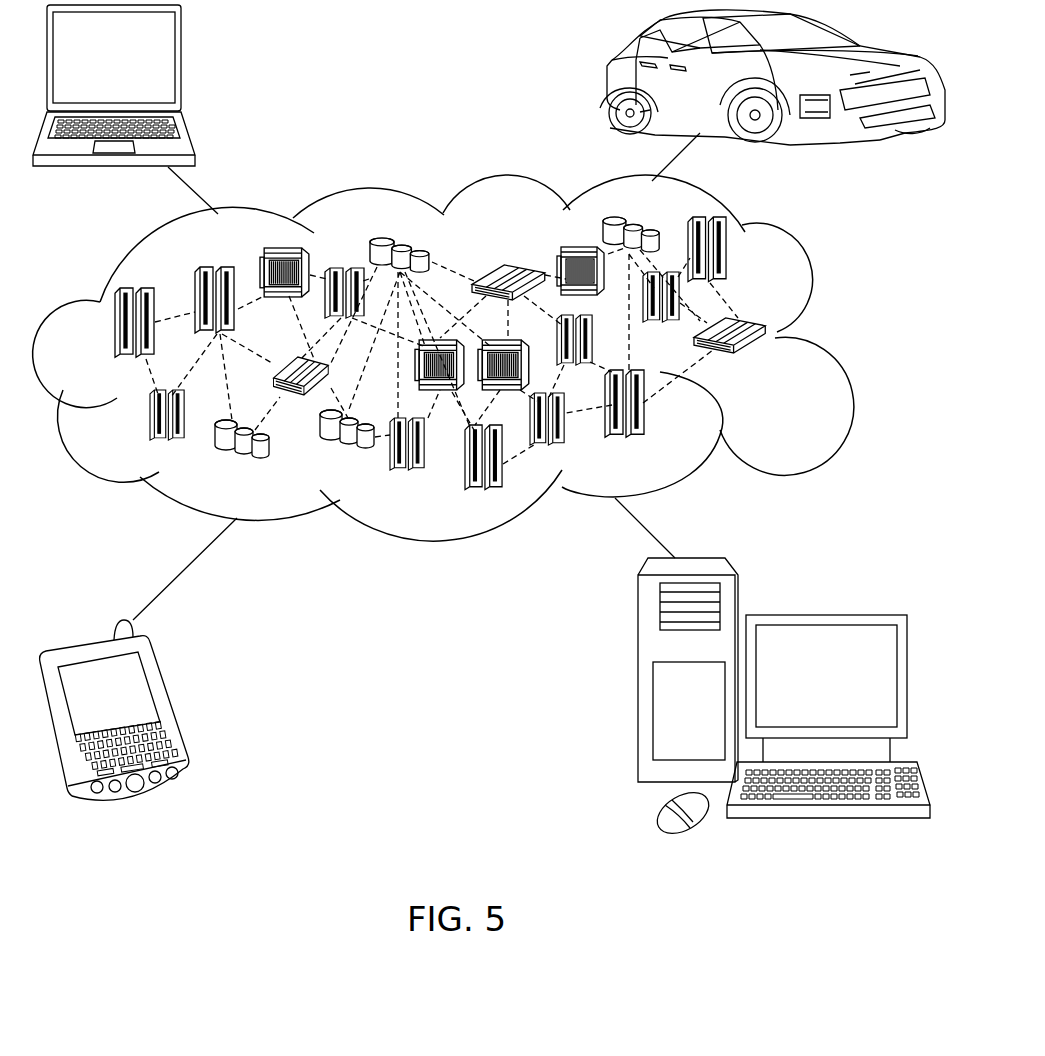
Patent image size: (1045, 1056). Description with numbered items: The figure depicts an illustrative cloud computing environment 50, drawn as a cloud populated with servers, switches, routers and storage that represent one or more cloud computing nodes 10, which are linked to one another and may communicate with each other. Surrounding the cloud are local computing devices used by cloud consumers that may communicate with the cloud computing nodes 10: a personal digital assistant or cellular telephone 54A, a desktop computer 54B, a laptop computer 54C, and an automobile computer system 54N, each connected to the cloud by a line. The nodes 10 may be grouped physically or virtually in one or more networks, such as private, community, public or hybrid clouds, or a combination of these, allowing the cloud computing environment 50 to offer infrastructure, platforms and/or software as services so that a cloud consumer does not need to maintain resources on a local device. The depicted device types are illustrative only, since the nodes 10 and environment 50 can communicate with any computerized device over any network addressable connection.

The cloud computing node 10 is at (768, 363).
The cloud computing environment 50 is at (823, 333).
The personal digital assistant (PDA) or cellular telephone 54A is at (172, 708).
The desktop computer 54B is at (823, 615).
The laptop computer 54C is at (182, 67).
The automobile computer system 54N is at (611, 81).